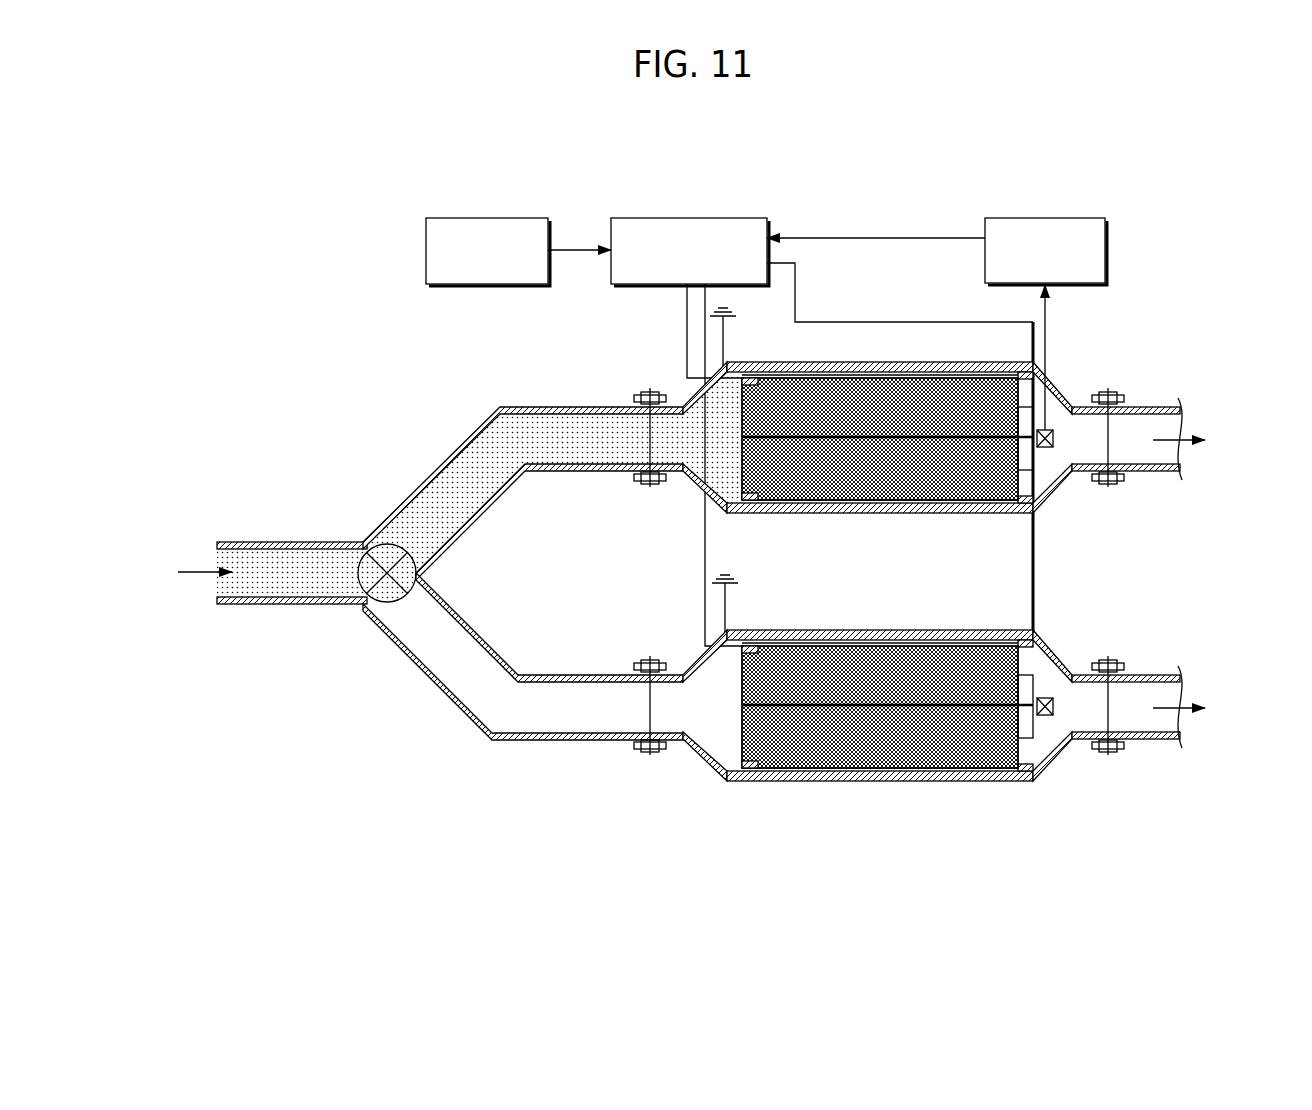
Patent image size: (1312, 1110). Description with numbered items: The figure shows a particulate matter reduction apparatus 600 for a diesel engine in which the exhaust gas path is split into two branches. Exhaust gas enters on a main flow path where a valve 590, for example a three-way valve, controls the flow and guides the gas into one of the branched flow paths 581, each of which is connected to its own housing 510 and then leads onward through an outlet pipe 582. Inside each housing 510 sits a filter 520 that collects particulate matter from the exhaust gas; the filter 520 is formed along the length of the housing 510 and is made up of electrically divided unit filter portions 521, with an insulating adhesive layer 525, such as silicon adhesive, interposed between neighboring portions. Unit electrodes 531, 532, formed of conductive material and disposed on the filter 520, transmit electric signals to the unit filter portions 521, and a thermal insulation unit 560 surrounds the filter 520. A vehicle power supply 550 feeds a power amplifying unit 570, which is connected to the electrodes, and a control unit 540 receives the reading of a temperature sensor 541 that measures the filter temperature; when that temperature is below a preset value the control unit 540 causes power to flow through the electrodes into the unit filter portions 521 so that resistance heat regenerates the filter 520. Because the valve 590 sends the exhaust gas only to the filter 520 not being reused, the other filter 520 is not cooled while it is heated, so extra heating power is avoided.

The particulate matter reduction apparatus 600 is at (598, 186).
The vehicle power supply 550 is at (500, 218).
The power amplifying unit 570 is at (700, 218).
The control unit 540 is at (1058, 218).
The valve 590 is at (367, 545).
The branched flow path 581 is at (590, 472).
The outlet pipe 582 is at (1160, 472).
The unit electrode 531 is at (733, 495).
The unit electrode 532 is at (1030, 405).
The housing 510 is at (866, 362).
The thermal insulation unit 560 is at (820, 372).
The filter 520 is at (935, 297).
The unit filter portion 521 is at (962, 390).
The insulating adhesive layer 525 is at (745, 433).
The temperature sensor 541 is at (1050, 447).